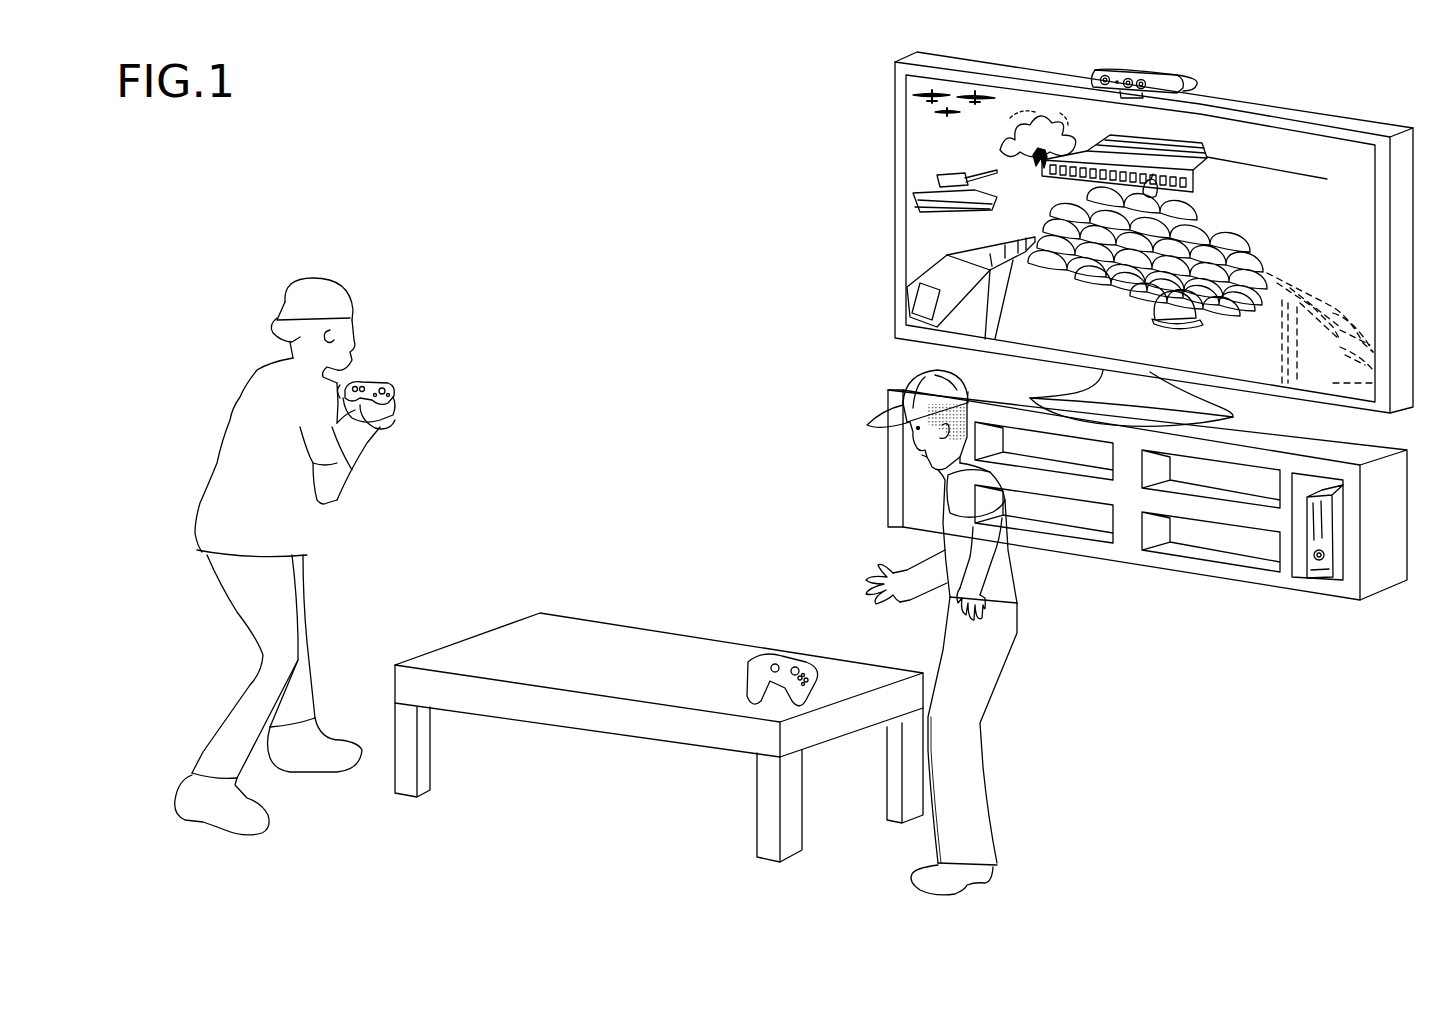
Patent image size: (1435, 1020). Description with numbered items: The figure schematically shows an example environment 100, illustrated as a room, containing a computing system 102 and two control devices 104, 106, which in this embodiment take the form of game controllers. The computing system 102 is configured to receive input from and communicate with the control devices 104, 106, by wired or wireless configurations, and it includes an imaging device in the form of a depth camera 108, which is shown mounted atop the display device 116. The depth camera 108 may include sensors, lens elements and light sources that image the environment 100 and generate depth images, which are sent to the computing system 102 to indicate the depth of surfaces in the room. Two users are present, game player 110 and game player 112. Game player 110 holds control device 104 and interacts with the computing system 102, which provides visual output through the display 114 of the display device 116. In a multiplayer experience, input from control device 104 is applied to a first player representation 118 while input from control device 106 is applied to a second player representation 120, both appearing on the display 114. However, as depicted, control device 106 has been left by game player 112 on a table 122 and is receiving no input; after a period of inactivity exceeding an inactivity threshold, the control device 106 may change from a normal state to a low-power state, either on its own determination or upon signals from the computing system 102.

The environment 100 is at (409, 133).
The computing system 102 is at (1328, 603).
The control device 104 is at (390, 386).
The control device 106 is at (783, 645).
The depth camera 108 is at (1152, 73).
The game player 110 is at (247, 380).
The game player 112 is at (1017, 573).
The display 114 is at (1372, 180).
The display device 116 is at (1338, 90).
The first player representation 118 is at (912, 238).
The second player representation 120 is at (1298, 268).
The table 122 is at (580, 618).